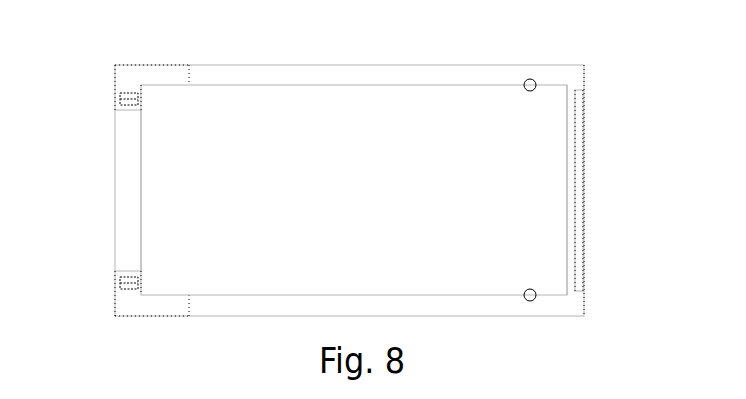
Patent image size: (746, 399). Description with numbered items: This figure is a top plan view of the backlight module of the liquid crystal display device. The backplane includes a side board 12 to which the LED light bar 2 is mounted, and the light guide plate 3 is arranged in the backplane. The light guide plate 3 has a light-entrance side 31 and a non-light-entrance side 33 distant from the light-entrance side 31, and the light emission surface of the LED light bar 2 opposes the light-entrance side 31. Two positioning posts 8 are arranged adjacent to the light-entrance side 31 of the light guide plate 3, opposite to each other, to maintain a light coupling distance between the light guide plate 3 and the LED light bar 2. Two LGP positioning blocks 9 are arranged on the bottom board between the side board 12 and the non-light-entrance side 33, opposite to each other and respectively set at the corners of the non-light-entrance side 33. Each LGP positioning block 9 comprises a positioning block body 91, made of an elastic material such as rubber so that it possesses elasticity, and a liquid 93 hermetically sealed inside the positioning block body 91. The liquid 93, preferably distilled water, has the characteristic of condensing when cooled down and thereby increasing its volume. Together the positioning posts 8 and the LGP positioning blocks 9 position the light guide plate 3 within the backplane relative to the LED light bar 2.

The light-emitting diode (LED) light bar 2 is at (577, 197).
The light guide plate 3 is at (386, 113).
The positioning post 8 is at (533, 80).
The LGP positioning block 9 is at (106, 207).
The side board 12 is at (115, 210).
The light-entrance side 31 is at (567, 165).
The non-light-entrance side 33 is at (140, 177).
The positioning block body 91 is at (138, 305).
The liquid 93 is at (122, 283).